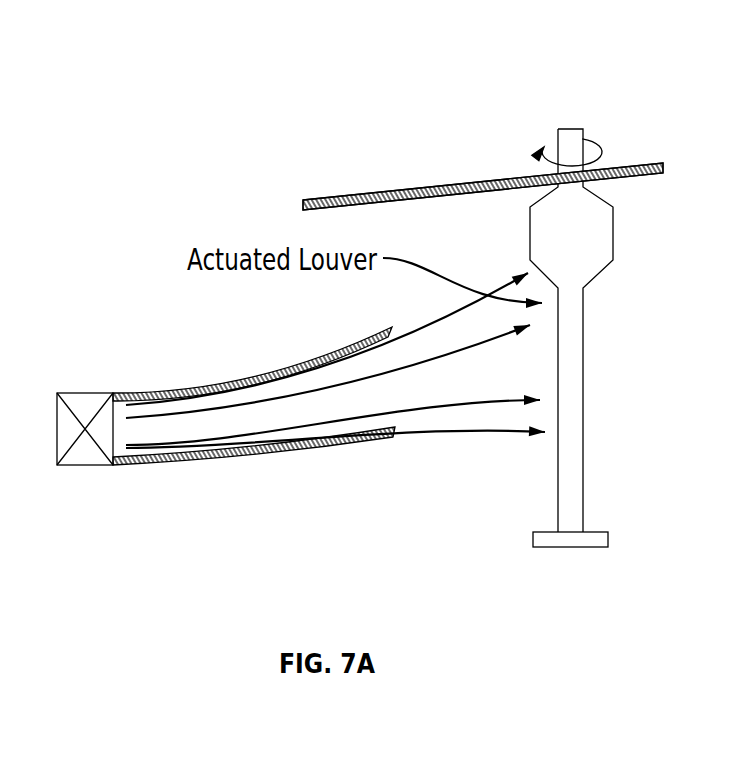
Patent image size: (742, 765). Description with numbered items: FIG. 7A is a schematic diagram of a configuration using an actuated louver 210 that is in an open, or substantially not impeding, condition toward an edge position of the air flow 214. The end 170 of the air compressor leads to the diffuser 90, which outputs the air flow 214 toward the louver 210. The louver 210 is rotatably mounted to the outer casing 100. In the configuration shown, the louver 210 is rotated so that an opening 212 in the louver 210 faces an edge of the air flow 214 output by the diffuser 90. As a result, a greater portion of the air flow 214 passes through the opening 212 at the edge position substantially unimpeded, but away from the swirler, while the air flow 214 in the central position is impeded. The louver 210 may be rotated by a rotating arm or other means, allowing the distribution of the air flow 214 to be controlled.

The outer casing 100 is at (447, 185).
The opening 212 is at (590, 230).
The louver 210 is at (572, 547).
The end of air compressor 170 is at (83, 465).
The diffuser 90 is at (240, 457).
The air flow 214 is at (472, 427).